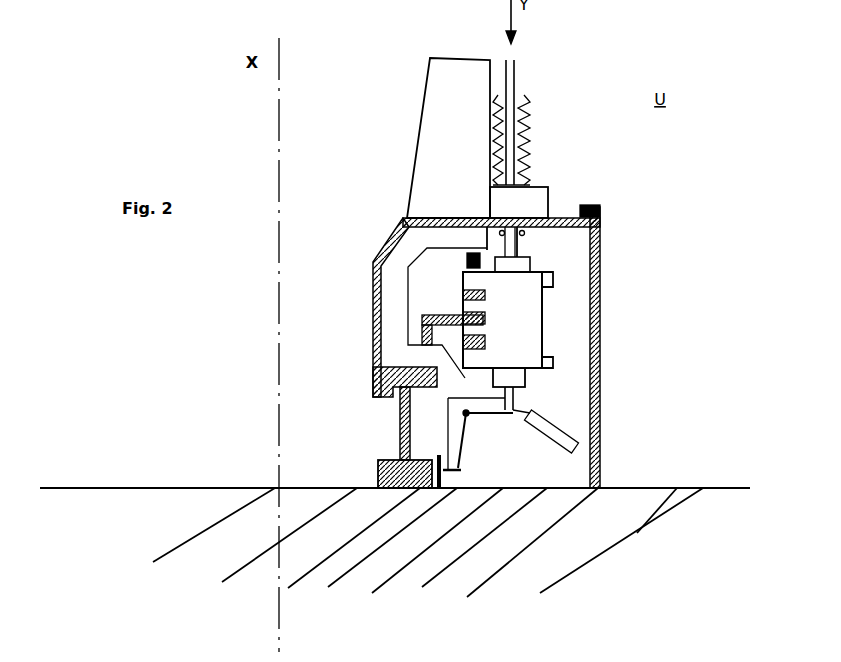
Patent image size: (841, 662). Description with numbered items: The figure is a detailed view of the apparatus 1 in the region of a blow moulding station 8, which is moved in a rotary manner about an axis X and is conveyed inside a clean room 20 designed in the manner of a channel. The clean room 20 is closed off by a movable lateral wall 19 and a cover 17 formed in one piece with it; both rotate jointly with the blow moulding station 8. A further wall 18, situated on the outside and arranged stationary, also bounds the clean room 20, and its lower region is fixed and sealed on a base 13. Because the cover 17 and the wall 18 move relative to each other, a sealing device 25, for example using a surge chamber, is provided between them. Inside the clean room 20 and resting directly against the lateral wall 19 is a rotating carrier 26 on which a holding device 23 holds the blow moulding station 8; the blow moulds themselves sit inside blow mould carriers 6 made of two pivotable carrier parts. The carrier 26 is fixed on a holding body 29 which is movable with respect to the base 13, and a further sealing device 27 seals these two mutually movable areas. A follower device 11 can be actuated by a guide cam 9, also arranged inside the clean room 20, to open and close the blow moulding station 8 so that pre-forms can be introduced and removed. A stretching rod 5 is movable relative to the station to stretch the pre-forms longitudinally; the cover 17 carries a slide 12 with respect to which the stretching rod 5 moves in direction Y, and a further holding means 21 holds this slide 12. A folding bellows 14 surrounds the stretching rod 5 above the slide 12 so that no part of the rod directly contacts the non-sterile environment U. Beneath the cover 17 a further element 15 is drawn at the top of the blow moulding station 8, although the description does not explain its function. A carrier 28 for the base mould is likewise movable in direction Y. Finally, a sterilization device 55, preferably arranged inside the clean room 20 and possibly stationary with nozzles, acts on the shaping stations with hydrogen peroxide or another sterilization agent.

The apparatus 1 is at (379, 122).
The stretching rod 5 is at (512, 135).
The blow mould carrier 6 is at (533, 342).
The blow moulding station 8 is at (530, 303).
The guide cam 9 is at (447, 471).
The follower device 11 is at (470, 428).
The slide 12 is at (534, 190).
The base 13 is at (703, 488).
The folding bellows 14 is at (528, 162).
The fastening 15 is at (548, 228).
The cover 17 is at (453, 217).
The wall 18 is at (600, 277).
The lateral wall 19 is at (372, 303).
The clean room 20 is at (576, 427).
The holding means 21 is at (475, 102).
The holding device 23 is at (440, 313).
The sealing device 25 is at (600, 207).
The carrier 26 is at (395, 358).
The sealing device 27 is at (378, 480).
The carrier for base mould 28 is at (514, 396).
The holding body 29 is at (398, 440).
The sterilization device 55 is at (465, 427).